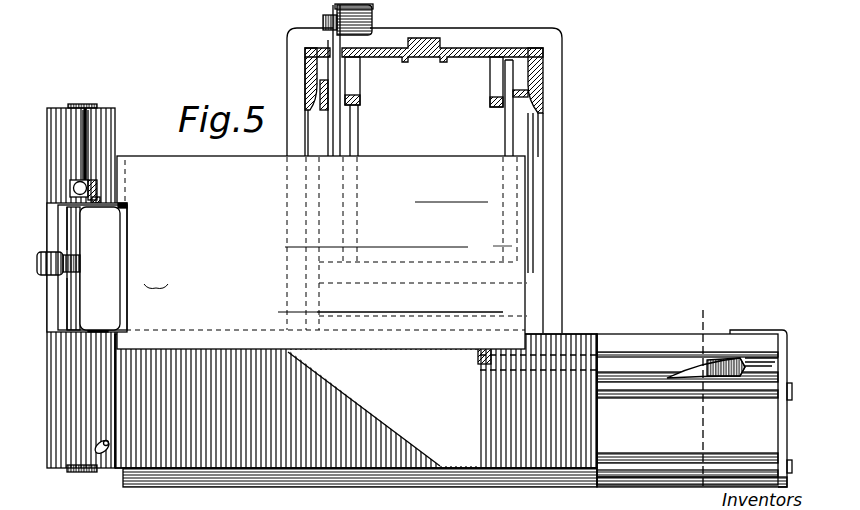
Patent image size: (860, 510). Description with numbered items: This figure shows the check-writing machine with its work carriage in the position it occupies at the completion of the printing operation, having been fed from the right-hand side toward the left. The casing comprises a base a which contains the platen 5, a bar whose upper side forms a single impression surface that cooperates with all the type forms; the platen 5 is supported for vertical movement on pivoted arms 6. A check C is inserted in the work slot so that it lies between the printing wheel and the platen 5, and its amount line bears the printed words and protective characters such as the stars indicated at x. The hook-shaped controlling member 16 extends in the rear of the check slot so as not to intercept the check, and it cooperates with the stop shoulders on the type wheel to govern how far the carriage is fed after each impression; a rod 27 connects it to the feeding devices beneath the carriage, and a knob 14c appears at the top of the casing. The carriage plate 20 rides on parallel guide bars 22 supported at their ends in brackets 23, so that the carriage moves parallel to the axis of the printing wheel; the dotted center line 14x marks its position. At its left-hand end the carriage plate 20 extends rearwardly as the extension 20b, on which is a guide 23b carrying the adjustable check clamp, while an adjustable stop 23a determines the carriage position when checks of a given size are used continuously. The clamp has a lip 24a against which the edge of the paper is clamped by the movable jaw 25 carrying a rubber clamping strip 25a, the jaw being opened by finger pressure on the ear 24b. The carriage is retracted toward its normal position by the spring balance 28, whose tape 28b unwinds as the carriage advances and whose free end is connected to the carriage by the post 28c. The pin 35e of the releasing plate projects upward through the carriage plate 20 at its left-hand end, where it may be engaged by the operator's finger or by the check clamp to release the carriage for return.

The base a is at (548, 160).
The check C is at (322, 252).
The protective asterisk printing x is at (156, 293).
The platen 5 is at (410, 308).
The pivoted arms 6 is at (508, 136).
The knob 14c is at (355, 28).
The center line 14x is at (664, 507).
The controlling member 16 is at (325, 92).
The carriage plate 20 is at (356, 410).
The rearward extension of carriage plate 20b is at (57, 110).
The guide bars 22 is at (625, 467).
The brackets 23 is at (783, 425).
The adjustable stop 23a is at (98, 190).
The guide 23b is at (85, 128).
The lip 24a is at (68, 226).
The ear 24b is at (68, 278).
The movable jaw 25 is at (123, 313).
The rubber clamping strip 25a is at (68, 264).
The operating rod 27 is at (338, 122).
The spring balance 28 is at (703, 376).
The tape 28b is at (611, 365).
The post 28c is at (480, 358).
The pin 35e is at (101, 457).